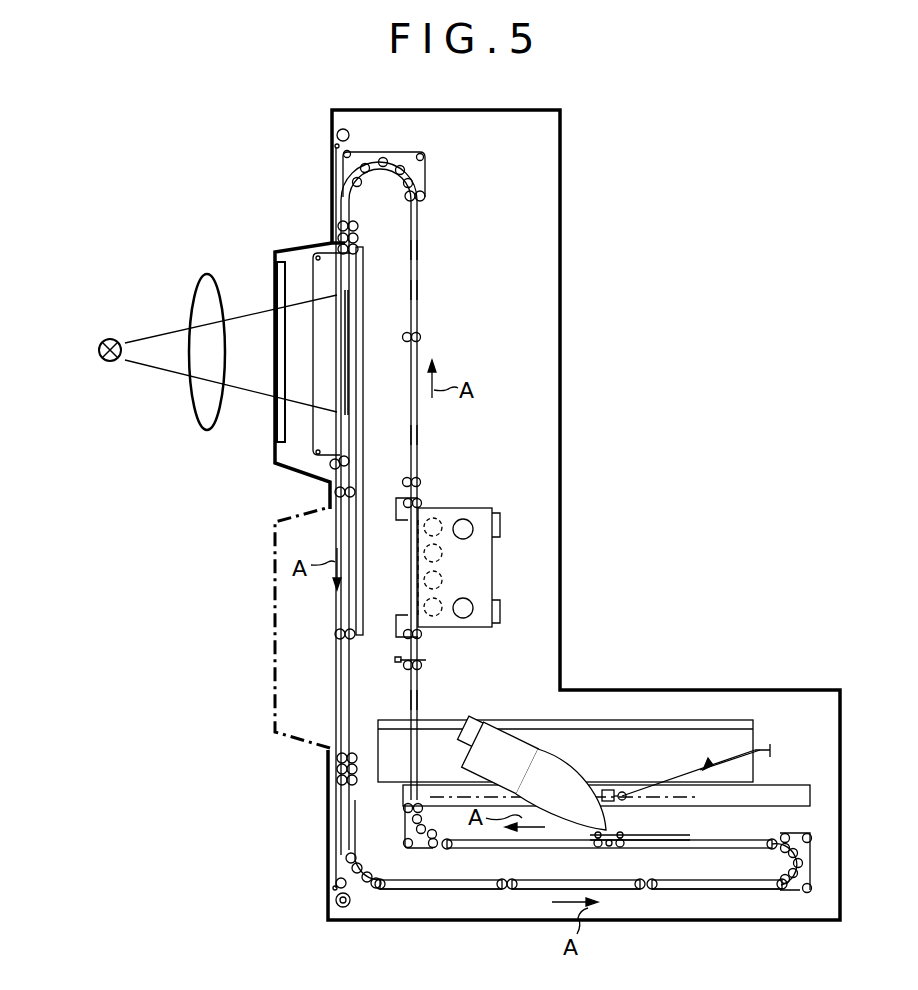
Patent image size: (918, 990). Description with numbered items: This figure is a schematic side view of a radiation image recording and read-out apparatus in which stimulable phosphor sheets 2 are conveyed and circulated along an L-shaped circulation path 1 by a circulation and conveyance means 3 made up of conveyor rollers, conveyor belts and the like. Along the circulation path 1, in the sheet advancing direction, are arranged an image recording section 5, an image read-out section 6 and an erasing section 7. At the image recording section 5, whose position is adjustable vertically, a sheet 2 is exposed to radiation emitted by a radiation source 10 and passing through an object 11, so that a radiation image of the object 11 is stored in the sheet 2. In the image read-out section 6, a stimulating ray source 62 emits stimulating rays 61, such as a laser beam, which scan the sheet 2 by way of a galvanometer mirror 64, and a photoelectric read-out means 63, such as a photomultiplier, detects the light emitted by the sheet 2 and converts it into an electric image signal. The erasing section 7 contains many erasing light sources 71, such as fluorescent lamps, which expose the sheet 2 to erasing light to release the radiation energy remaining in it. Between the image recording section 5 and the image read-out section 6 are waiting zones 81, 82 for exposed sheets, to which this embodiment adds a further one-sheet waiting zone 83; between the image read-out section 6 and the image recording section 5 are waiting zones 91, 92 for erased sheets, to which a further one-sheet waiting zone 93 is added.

The circulation path 1 is at (423, 248).
The stimulable phosphor sheet 2 is at (343, 375).
The circulation and conveyance means 3 is at (425, 172).
The image recording section 5 is at (273, 264).
The image read-out section 6 is at (594, 753).
The erasing section 7 is at (468, 567).
The radiation source 10 is at (111, 362).
The object 11 is at (217, 412).
The stimulating rays 61 is at (727, 766).
The stimulating ray source 62 is at (757, 751).
The photoelectric read-out means 63 is at (512, 735).
The galvanometer mirror 64 is at (615, 827).
The erasing light sources 71 is at (440, 558).
The waiting zone 81 is at (728, 892).
The waiting zone 82 is at (534, 892).
The waiting zone 83 is at (473, 892).
The waiting zone 91 is at (420, 294).
The waiting zone 92 is at (420, 438).
The waiting zone 93 is at (418, 700).